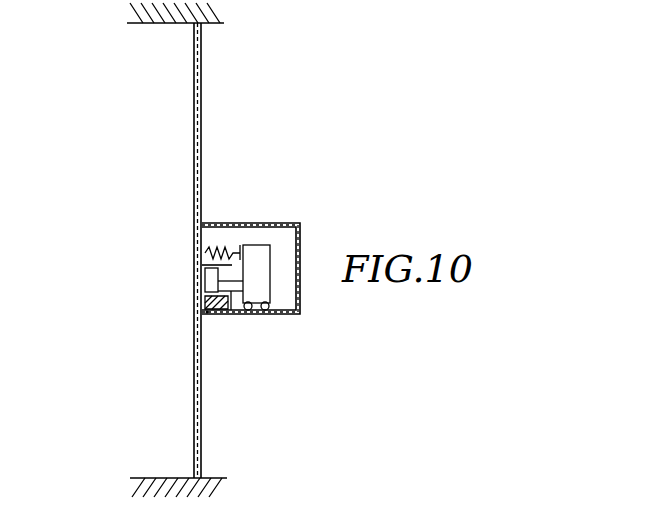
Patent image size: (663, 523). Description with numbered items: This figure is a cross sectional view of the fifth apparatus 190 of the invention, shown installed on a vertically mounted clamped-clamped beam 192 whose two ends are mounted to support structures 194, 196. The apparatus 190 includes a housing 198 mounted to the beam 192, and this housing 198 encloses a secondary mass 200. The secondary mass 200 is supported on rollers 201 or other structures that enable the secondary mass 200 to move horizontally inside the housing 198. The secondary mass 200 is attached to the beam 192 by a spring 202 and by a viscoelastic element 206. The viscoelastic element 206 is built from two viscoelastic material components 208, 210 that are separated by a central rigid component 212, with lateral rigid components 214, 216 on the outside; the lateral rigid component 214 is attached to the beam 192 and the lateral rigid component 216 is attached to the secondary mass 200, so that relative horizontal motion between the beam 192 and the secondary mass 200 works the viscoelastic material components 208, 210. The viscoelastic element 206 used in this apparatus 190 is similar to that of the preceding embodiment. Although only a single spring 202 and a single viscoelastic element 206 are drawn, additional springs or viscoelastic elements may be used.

The apparatus 190 is at (288, 218).
The clamped-clamped beam 192 is at (193, 103).
The support structure 194 is at (153, 23).
The support structure 196 is at (163, 477).
The housing 198 is at (300, 238).
The secondary mass 200 is at (271, 283).
The rollers 201 is at (253, 313).
The spring 202 is at (220, 251).
The viscoelastic element 206 is at (203, 321).
The viscoelastic material component 208 is at (205, 273).
The viscoelastic material component 210 is at (205, 284).
The central rigid component 212 is at (233, 312).
The lateral rigid component 214 is at (205, 310).
The lateral rigid component 216 is at (203, 264).